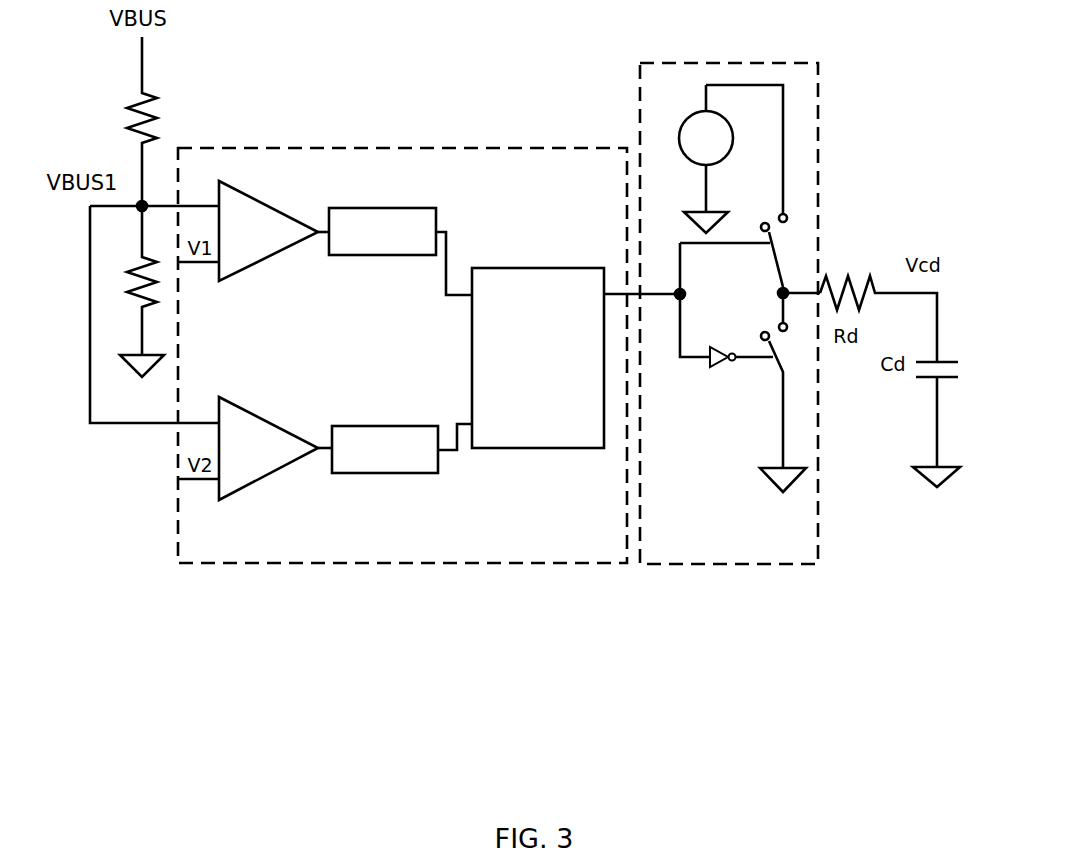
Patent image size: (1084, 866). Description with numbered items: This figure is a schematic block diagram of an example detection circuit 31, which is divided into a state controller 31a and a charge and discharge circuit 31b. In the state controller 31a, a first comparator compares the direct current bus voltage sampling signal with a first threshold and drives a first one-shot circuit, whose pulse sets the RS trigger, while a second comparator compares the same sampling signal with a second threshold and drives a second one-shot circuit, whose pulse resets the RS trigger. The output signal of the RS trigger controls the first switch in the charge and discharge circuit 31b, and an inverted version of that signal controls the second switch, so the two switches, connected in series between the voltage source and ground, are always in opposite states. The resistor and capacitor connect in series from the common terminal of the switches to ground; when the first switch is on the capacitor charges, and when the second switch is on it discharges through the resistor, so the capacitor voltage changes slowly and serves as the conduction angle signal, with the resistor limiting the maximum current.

The detection circuit 31 is at (575, 102).
The state controller 31a is at (455, 147).
The charge and discharge circuit 31b is at (640, 119).